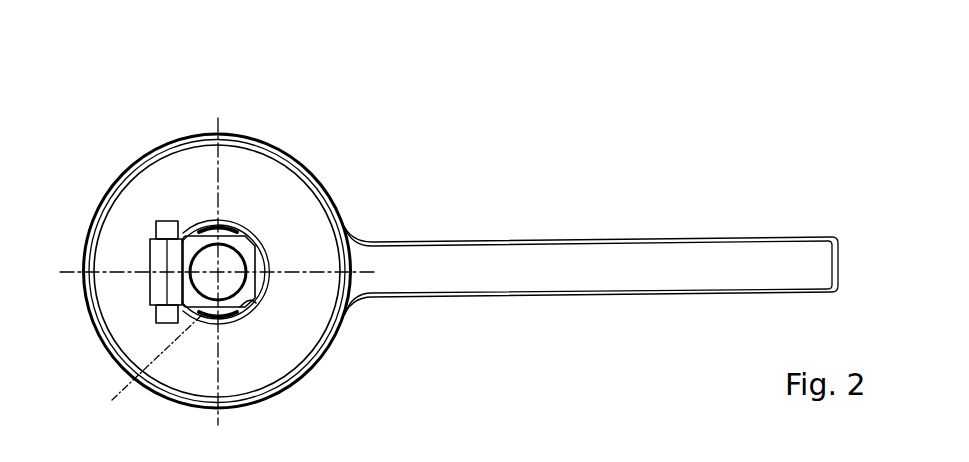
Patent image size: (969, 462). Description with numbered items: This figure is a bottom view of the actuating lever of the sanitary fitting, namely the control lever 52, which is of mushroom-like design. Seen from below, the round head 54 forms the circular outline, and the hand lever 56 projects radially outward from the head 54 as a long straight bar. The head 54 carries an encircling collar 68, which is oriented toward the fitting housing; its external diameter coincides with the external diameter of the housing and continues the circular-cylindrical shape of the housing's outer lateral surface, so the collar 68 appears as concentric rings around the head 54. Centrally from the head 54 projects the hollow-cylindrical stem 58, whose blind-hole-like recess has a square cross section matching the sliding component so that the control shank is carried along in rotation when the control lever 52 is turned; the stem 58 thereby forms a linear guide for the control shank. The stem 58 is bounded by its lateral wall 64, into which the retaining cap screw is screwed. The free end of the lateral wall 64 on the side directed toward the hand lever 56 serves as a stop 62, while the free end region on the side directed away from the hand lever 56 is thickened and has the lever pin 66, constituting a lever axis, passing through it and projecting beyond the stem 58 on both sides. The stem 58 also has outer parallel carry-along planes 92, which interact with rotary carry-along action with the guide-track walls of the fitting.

The control lever 52 is at (331, 177).
The head 54 is at (153, 153).
The hand lever 56 is at (615, 248).
The stem 58 is at (240, 226).
The stop 62 is at (262, 262).
The lateral wall 64 is at (136, 373).
The lever pin 66 is at (163, 228).
The encircling collar 68 is at (102, 332).
The carry-along planes 92 is at (198, 226).